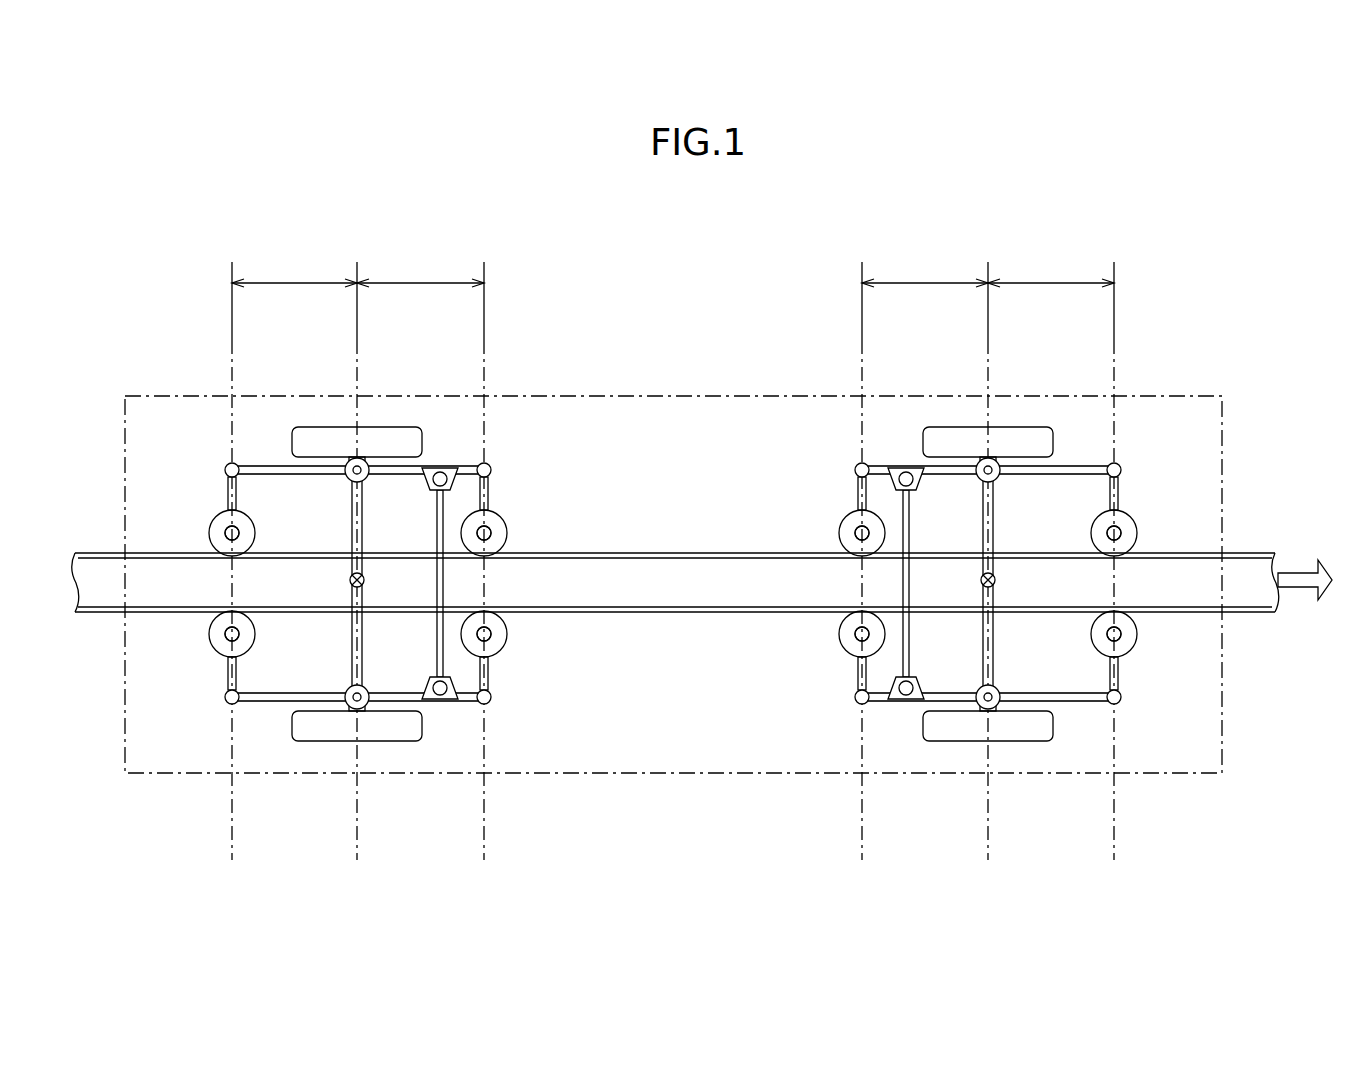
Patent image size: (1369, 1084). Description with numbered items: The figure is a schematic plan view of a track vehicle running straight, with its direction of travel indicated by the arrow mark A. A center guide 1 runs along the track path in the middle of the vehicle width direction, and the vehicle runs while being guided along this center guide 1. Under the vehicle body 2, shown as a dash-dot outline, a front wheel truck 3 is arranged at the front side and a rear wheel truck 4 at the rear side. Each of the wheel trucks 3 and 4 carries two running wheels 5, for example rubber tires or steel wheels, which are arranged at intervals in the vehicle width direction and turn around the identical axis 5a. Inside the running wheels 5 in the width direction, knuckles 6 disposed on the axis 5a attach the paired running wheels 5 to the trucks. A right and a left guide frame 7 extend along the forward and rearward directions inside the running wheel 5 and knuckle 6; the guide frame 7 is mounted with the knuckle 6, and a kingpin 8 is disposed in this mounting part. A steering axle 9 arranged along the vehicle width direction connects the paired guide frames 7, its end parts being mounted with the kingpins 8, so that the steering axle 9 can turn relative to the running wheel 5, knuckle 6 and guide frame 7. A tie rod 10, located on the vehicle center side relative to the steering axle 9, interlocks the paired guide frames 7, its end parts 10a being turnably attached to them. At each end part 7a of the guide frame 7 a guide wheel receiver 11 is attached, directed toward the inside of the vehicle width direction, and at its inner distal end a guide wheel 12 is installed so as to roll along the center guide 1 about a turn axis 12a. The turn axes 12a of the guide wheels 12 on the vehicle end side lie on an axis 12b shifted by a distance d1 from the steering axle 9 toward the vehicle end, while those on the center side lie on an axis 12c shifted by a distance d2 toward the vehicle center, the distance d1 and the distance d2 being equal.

The center guide 1 is at (105, 553).
The vehicle body 2 is at (190, 395).
The front wheel truck 3 is at (1076, 424).
The rear wheel truck 4 is at (270, 424).
The running wheel 5 is at (388, 440).
The axis 5a is at (357, 845).
The knuckle 6 is at (347, 470).
The guide frame 7 is at (470, 466).
The end part 7a is at (226, 466).
The kingpin 8 is at (366, 476).
The steering axle 9 is at (352, 578).
The tie rod 10 is at (437, 580).
The end part 10a is at (440, 467).
The guide wheel receiver 11 is at (226, 490).
The guide wheel 12 is at (216, 520).
The turn axis 12a is at (226, 533).
The axis 12b is at (232, 812).
The axis 12c is at (484, 812).
The distance d1 is at (673, 267).
The distance d2 is at (672, 267).
The arrow mark A is at (1305, 564).